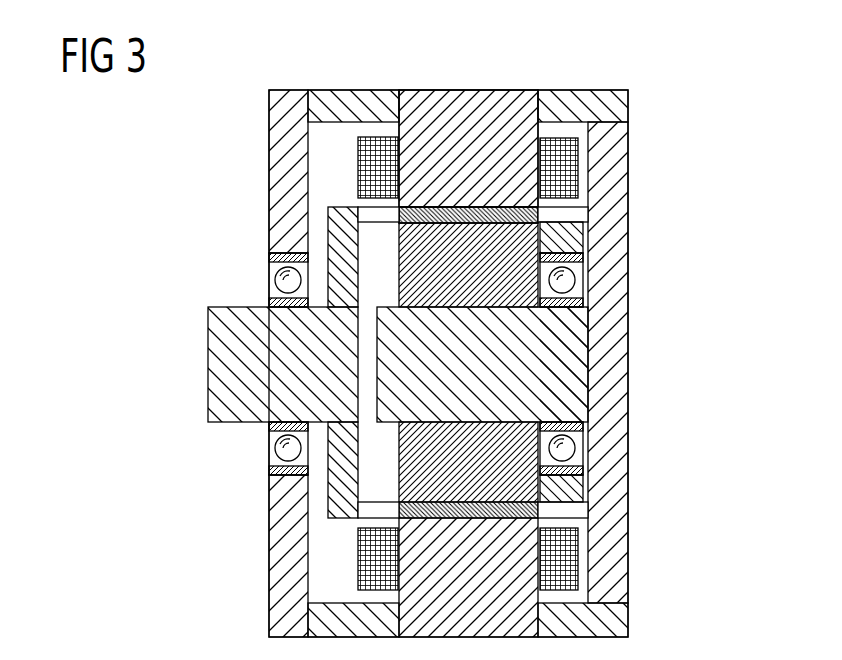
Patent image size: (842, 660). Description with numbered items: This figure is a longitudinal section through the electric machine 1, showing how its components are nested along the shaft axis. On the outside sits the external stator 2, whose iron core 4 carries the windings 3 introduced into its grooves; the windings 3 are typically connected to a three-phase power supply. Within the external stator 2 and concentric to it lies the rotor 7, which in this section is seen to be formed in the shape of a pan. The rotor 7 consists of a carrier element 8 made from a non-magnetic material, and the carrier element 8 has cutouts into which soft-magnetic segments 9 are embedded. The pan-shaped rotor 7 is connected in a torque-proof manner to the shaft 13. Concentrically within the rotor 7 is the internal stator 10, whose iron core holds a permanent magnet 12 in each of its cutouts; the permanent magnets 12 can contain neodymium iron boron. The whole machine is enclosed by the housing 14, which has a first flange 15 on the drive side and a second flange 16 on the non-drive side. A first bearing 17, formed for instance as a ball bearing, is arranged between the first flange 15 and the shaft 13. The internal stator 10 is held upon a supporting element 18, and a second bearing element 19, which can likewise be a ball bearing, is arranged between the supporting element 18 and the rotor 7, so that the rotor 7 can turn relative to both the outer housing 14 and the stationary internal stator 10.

The electric machine 1 is at (253, 105).
The external stator 2 is at (503, 100).
The windings 3 is at (374, 145).
The iron core 4 is at (462, 105).
The rotor 7 is at (512, 213).
The carrier element 8 is at (365, 216).
The soft-magnetic segments 9 is at (422, 212).
The internal stator 10 is at (515, 318).
The permanent magnet 12 is at (522, 563).
The shaft 13 is at (230, 366).
The housing 14 is at (624, 86).
The first flange 15 is at (288, 541).
The second flange 16 is at (617, 487).
The first bearing 17 is at (282, 283).
The supporting element 18 is at (578, 373).
The second bearing element 19 is at (565, 283).